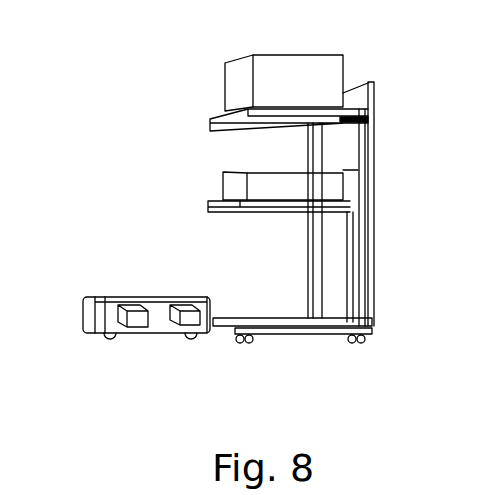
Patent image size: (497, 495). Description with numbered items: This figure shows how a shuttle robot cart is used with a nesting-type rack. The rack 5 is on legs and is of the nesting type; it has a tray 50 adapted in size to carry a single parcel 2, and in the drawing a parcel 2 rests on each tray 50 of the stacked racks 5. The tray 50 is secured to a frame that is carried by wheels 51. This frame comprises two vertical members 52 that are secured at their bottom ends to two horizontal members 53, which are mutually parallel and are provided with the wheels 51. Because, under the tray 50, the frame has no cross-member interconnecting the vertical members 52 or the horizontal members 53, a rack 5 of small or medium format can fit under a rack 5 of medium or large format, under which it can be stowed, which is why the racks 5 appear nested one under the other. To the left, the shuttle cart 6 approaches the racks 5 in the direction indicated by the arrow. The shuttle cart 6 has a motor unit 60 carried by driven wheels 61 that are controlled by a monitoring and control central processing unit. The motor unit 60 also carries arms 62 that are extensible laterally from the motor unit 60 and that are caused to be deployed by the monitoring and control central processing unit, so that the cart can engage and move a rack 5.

The parcel 2 is at (288, 72).
The rack 5 is at (380, 115).
The shuttle cart 6 is at (112, 277).
The tray 50 is at (210, 117).
The wheels 51 is at (245, 343).
The vertical members 52 is at (310, 230).
The horizontal members 53 is at (282, 320).
The motor unit 60 is at (83, 308).
The driven wheels 61 is at (106, 340).
The arms 62 is at (180, 299).